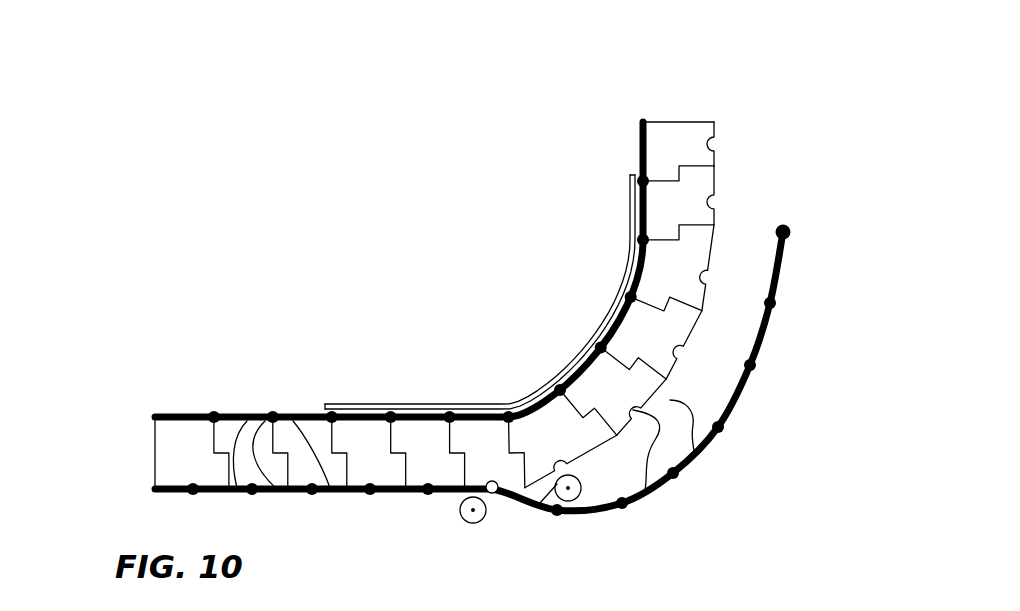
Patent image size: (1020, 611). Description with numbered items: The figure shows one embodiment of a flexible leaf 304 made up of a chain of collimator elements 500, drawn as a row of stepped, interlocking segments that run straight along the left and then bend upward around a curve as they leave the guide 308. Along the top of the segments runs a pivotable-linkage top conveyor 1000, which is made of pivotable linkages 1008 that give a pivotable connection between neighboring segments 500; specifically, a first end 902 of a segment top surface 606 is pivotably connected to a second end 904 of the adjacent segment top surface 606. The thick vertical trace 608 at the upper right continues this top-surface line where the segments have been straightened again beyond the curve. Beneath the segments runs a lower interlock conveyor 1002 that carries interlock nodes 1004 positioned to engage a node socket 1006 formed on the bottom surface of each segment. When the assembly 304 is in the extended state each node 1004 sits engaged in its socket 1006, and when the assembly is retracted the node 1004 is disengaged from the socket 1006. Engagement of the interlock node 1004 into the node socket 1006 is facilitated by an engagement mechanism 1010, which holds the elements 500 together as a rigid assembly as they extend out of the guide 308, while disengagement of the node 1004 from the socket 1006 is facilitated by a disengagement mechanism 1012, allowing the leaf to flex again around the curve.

The flexible leaf 304 is at (161, 358).
The guide 308 is at (485, 403).
The collimator element 500 is at (676, 383).
The segment top surface 606 is at (152, 446).
The vertical conductive trace 608 is at (634, 158).
The first end 902 is at (330, 489).
The second end 904 is at (278, 491).
The pivotable-linkage top conveyor 1000 is at (194, 416).
The lower interlock conveyor 1002 is at (787, 268).
The interlock node 1004 is at (556, 518).
The node socket 1006 is at (645, 494).
The pivotable linkage 1008 is at (273, 416).
The engagement mechanism 1010 is at (461, 520).
The disengagement mechanism 1012 is at (532, 512).